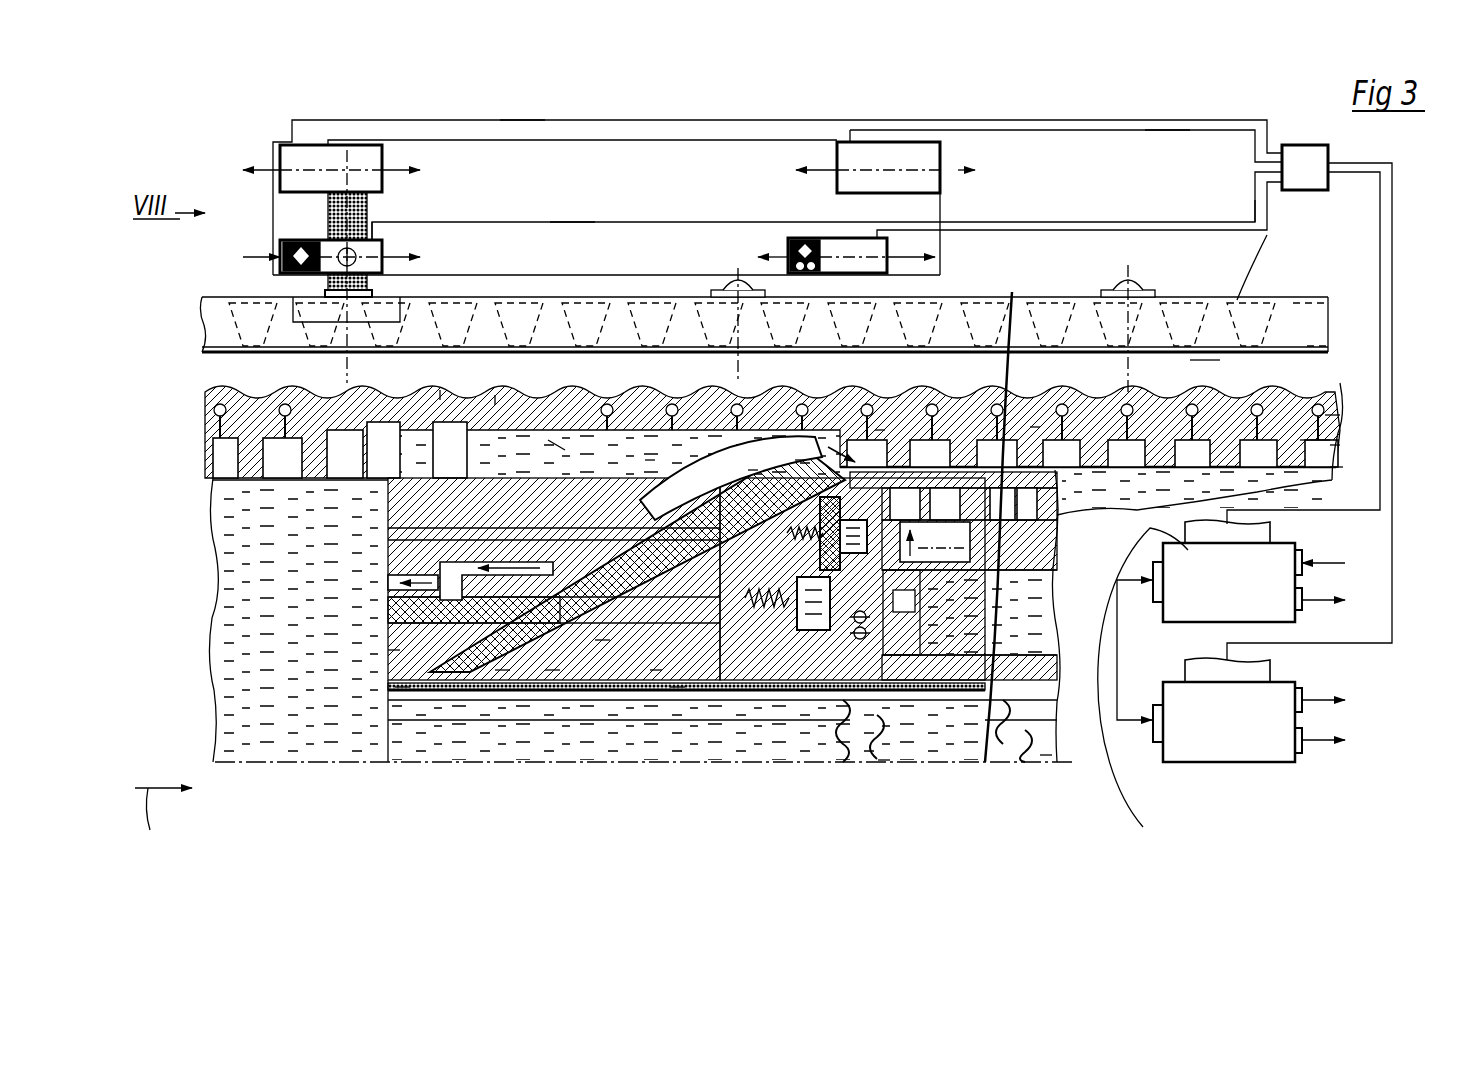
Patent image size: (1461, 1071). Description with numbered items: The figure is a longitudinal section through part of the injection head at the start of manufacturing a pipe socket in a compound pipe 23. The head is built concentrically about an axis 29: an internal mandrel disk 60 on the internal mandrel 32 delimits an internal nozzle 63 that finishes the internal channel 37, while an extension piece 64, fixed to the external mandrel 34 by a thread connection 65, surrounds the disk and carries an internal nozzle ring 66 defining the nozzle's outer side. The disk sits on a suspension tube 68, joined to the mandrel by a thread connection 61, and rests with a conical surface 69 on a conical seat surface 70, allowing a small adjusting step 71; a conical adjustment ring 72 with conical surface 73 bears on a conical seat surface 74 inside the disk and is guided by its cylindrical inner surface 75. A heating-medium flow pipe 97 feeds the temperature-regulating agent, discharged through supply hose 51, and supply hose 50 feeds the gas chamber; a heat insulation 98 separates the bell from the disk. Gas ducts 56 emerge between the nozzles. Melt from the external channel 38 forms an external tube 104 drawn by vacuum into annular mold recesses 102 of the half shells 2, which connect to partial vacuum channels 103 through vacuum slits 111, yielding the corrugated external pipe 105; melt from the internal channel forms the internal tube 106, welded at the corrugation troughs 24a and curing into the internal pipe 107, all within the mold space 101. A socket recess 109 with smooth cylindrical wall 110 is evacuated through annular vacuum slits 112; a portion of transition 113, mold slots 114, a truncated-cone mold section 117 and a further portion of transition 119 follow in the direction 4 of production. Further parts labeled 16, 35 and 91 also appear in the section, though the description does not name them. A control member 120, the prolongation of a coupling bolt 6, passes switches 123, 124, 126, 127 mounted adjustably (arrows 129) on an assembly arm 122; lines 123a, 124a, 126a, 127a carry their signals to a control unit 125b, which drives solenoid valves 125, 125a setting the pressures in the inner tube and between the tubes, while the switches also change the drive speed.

The half shell 2 is at (1283, 237).
The direction of production 4 is at (163, 823).
The coupling bolt 6 is at (323, 288).
The separating wall 16 is at (1012, 292).
The compound pipe 23 is at (1300, 490).
The corrugation troughs 24a is at (1315, 440).
The axis 29 is at (320, 763).
The internal mandrel 32 is at (387, 657).
The external mandrel 34 is at (387, 603).
The side reservoir 35 is at (387, 517).
The internal channel 37 is at (387, 633).
The external channel 38 is at (387, 540).
The supply hose 50 is at (883, 763).
The supply hose 51 is at (1047, 760).
The gas ducts 56 is at (1273, 571).
The internal mandrel disk 60 is at (598, 700).
The thread connection 61 is at (453, 687).
The internal nozzle 63 is at (845, 480).
The extension piece 64 is at (400, 687).
The thread connection 65 is at (387, 710).
The internal nozzle ring 66 is at (752, 473).
The suspension tube 68 is at (950, 532).
The conical surface 69 is at (600, 640).
The conical seat surface 70 is at (553, 670).
The adjusting step 71 is at (500, 670).
The conical adjustment ring 72 is at (737, 687).
The conical surface 73 is at (677, 687).
The conical seat surface 74 is at (793, 670).
The cylindrical inner surface 75 is at (653, 670).
The curved channel 91 is at (618, 440).
The heating-medium flow pipe 97 is at (1003, 753).
The heat insulation 98 is at (877, 723).
The mold space 101 is at (880, 430).
The mold recesses 102 is at (290, 458).
The partial vacuum channels 103 is at (1203, 368).
The external tube 104 is at (710, 500).
The corrugated external pipe 105 is at (1337, 438).
The internal tube 106 is at (1035, 427).
The internal pipe 107 is at (1343, 468).
The socket recess 109 is at (648, 460).
The cylindrical wall 110 is at (548, 440).
The vacuum slits 111 is at (1335, 417).
The annular vacuum slits 112 is at (495, 400).
The portion of transition 113 is at (800, 467).
The mold slots 114 is at (445, 390).
The mold section 117 is at (330, 393).
The portion of transition 119 is at (214, 412).
The control member 120 is at (335, 185).
The assembly arm 122 is at (768, 160).
The switch 123 is at (345, 160).
The line 123a is at (522, 120).
The switch 124 is at (885, 160).
The line 124a is at (1168, 130).
The solenoid valve 125 is at (1250, 733).
The solenoid valve 125a is at (1143, 693).
The control unit 125b is at (1305, 152).
The switch 126 is at (378, 240).
The line 126a is at (572, 220).
The switch 127 is at (847, 250).
The line 127a is at (1265, 207).
The arrows 129 is at (250, 257).